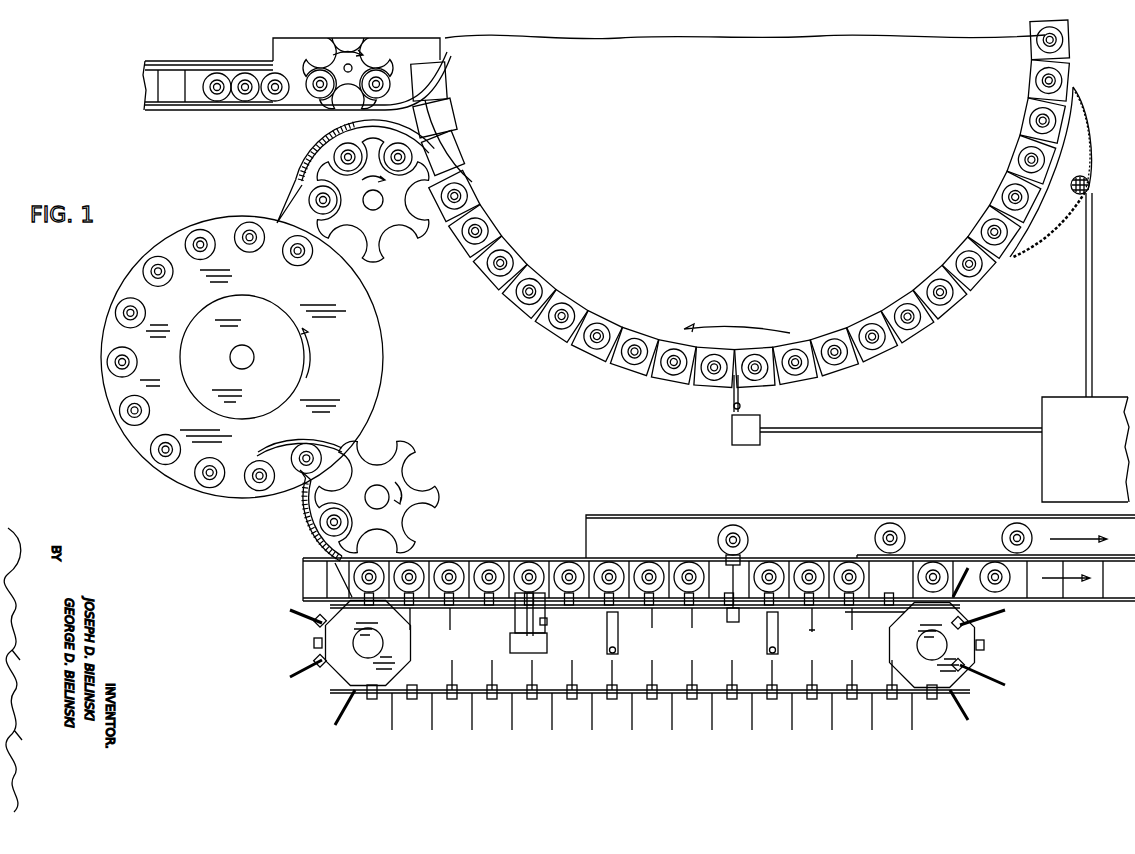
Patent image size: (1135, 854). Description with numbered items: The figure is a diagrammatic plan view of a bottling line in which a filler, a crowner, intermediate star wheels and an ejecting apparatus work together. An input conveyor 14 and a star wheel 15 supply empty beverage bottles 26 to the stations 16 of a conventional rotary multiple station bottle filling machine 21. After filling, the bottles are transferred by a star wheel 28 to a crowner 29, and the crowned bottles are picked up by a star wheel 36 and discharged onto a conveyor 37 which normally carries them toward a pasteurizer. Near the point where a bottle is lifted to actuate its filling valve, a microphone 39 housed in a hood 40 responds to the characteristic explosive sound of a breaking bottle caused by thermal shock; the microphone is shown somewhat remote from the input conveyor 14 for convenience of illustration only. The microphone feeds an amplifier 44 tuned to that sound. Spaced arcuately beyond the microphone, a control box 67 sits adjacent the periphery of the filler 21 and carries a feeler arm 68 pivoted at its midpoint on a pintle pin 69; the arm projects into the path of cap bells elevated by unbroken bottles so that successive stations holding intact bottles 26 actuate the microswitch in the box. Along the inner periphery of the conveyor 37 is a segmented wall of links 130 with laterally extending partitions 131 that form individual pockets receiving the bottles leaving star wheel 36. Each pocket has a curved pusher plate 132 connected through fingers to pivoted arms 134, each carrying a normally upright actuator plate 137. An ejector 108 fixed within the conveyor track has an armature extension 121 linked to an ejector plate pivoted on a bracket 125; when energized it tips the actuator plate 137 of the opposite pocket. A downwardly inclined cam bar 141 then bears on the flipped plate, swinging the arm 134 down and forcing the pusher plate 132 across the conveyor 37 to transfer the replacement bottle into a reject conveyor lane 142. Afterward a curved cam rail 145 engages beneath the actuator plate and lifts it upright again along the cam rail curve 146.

The input conveyor 14 is at (212, 108).
The star wheel 15 is at (340, 100).
The stations 16 is at (450, 110).
The bottle filling machine 21 is at (586, 385).
The beverage bottles 26 is at (275, 98).
The star wheel 28 is at (388, 262).
The crowner 29 is at (418, 358).
The star wheel 36 is at (412, 447).
The conveyor 37 is at (303, 582).
The microphone 39 is at (1090, 182).
The hood 40 is at (1077, 117).
The amplifier 44 is at (1075, 405).
The control box 67 is at (745, 445).
The feeler arm 68 is at (733, 390).
The pintle pin 69 is at (748, 405).
The ejector 108 is at (548, 650).
The extension 121 is at (548, 628).
The bracket 125 is at (512, 622).
The links 130 is at (425, 700).
The partitions 131 is at (872, 712).
The pusher plate 132 is at (745, 557).
The arms 134 is at (492, 670).
The actuator plate 137 is at (740, 612).
The cam bar 141 is at (712, 612).
The reject conveyor lane 142 is at (992, 525).
The curved cam rail 145 is at (830, 612).
The cam rail curve 146 is at (856, 612).